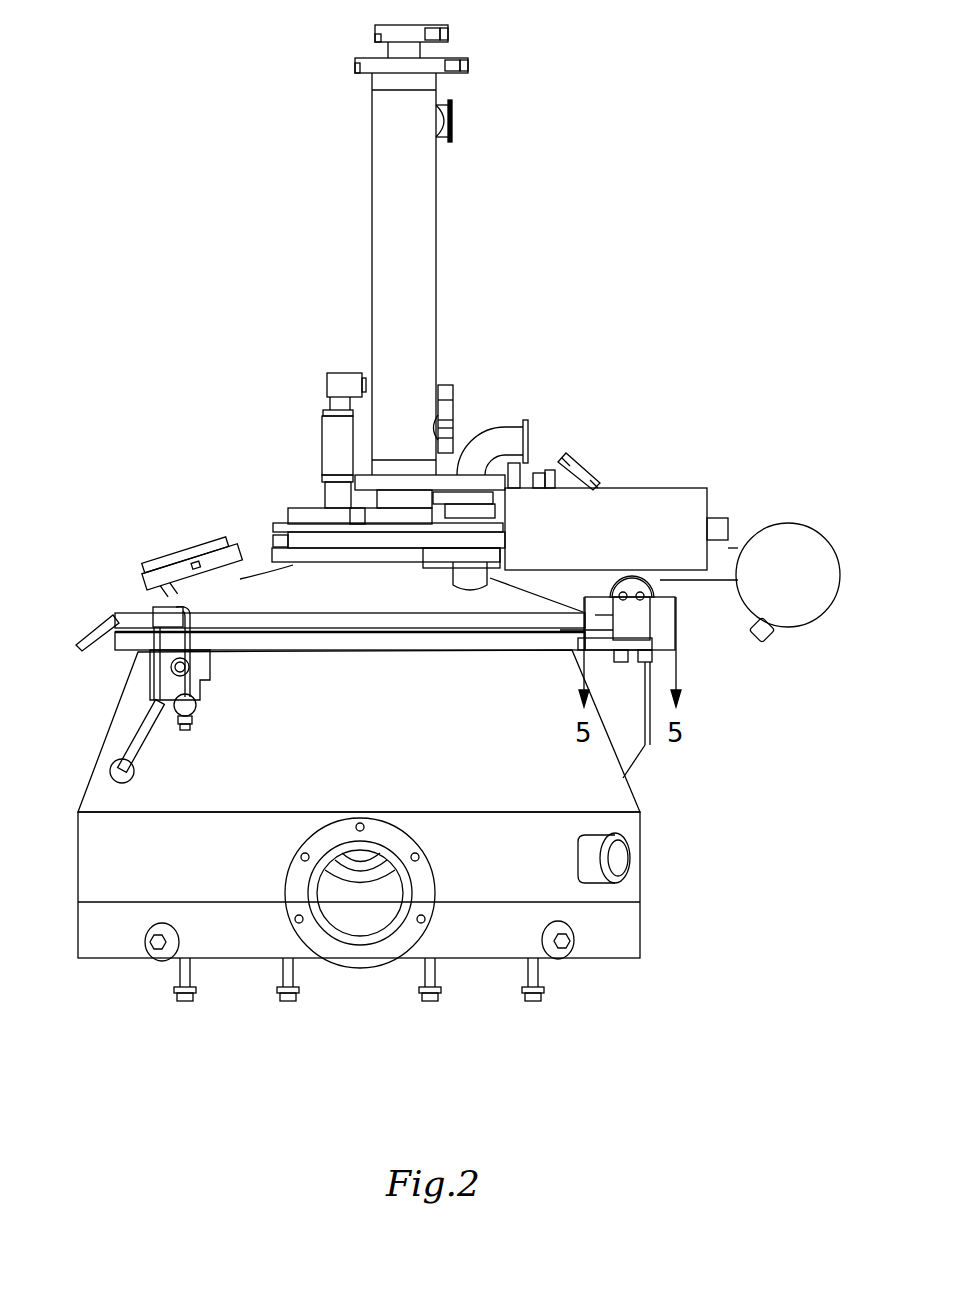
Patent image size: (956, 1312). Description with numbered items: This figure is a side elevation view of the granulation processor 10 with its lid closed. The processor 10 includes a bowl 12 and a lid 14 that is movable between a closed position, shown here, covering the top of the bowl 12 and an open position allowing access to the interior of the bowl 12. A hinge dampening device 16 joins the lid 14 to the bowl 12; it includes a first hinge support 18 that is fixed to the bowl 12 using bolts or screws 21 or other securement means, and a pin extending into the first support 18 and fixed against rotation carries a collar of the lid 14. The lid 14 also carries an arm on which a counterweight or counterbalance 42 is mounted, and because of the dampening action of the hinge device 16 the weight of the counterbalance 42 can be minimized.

The granulation processor 10 is at (186, 420).
The bowl 12 is at (120, 735).
The lid 14 is at (272, 578).
The hinge dampening device 16 is at (655, 612).
The first hinge support 18 is at (628, 585).
The bolts or screws 21 is at (625, 662).
The counterweight or counterbalance 42 is at (790, 540).